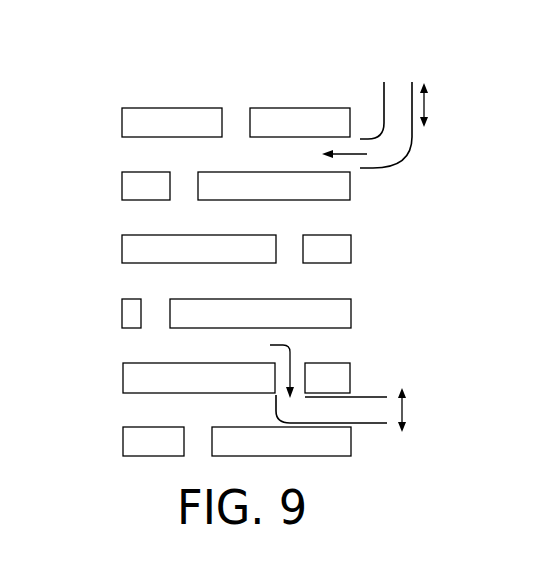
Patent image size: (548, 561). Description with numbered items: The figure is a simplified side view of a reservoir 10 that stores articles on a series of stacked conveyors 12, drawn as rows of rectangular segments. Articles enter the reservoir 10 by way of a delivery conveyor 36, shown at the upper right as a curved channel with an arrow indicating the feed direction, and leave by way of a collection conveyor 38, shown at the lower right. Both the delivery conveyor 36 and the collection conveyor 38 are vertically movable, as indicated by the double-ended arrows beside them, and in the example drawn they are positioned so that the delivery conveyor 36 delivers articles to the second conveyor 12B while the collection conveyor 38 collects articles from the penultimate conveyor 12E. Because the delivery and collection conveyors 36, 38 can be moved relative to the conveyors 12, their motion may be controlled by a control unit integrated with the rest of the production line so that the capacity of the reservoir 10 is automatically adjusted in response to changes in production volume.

The reservoir 10 is at (118, 67).
The conveyor 12 is at (122, 119).
The second conveyor 12B is at (122, 183).
The penultimate conveyor 12E is at (122, 375).
The delivery conveyor 36 is at (403, 157).
The collection conveyor 38 is at (374, 396).